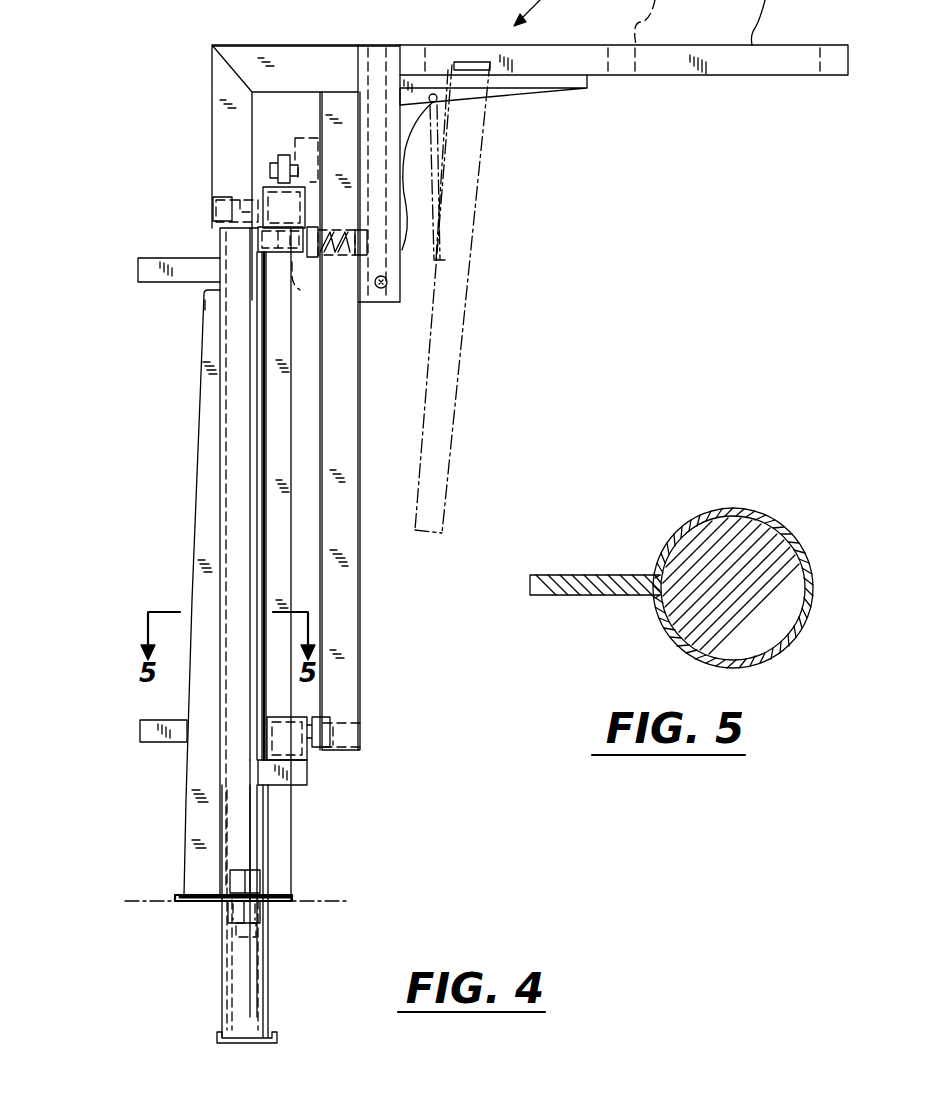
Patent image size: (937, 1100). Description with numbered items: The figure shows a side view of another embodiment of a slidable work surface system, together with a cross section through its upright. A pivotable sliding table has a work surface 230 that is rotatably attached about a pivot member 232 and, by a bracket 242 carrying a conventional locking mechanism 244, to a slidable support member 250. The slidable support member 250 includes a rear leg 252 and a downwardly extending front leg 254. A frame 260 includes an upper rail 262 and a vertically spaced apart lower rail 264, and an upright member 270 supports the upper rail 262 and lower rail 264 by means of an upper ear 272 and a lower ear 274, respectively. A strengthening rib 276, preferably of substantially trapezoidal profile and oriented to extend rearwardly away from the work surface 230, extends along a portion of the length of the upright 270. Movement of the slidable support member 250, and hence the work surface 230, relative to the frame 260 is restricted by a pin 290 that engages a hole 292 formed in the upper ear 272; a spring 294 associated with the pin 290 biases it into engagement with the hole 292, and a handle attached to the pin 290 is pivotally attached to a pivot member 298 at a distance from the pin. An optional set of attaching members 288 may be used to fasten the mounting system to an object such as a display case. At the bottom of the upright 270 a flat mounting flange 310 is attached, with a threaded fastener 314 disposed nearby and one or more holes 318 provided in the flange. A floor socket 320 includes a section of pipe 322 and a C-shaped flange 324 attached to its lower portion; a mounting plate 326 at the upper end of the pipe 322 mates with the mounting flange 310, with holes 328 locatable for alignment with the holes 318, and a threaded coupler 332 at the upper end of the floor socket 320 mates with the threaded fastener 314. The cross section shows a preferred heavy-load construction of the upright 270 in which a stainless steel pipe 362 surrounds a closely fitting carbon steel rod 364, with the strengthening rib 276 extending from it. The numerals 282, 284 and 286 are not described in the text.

In FIG. 4, the work surface 230 is at (447, 448).
In FIG. 4, the pivot member 232 is at (436, 102).
In FIG. 4, the bracket 242 is at (405, 160).
In FIG. 4, the locking mechanism 244 is at (413, 90).
In FIG. 4, the slidable support member 250 is at (204, 58).
In FIG. 4, the rear leg 252 is at (212, 182).
In FIG. 4, the front leg 254 is at (357, 115).
In FIG. 4, the frame 260 is at (188, 443).
In FIG. 4, the upper rail 262 is at (275, 195).
In FIG. 4, the lower rail 264 is at (297, 750).
In FIG. 4, the upright member 270 is at (233, 508).
In FIG. 5, the upright member 270 is at (718, 508).
In FIG. 4, the upper ear 272 is at (263, 253).
In FIG. 4, the lower ear 274 is at (290, 786).
In FIG. 4, the strengthening rib 276 is at (203, 553).
In FIG. 5, the strengthening rib 276 is at (565, 597).
In FIG. 4, the bolt 282 is at (280, 157).
In FIG. 4, the bracket 284 is at (232, 210).
In FIG. 4, the bolt 286 is at (325, 722).
In FIG. 4, the attaching members 288 is at (140, 276).
In FIG. 4, the pin 290 is at (262, 238).
In FIG. 4, the hole 292 is at (300, 285).
In FIG. 4, the spring 294 is at (340, 262).
In FIG. 4, the pivot member 298 is at (388, 282).
In FIG. 4, the mounting flange 310 is at (190, 893).
In FIG. 4, the threaded fastener 314 is at (256, 935).
In FIG. 4, the holes 318 is at (292, 893).
In FIG. 4, the floor socket 320 is at (203, 862).
In FIG. 4, the pipe 322 is at (224, 1012).
In FIG. 4, the C-shaped flange 324 is at (278, 1040).
In FIG. 4, the mounting plate 326 is at (225, 896).
In FIG. 4, the holes 328 is at (275, 905).
In FIG. 4, the threaded coupler 332 is at (270, 915).
In FIG. 5, the stainless steel pipe 362 is at (792, 530).
In FIG. 5, the carbon steel rod 364 is at (812, 578).